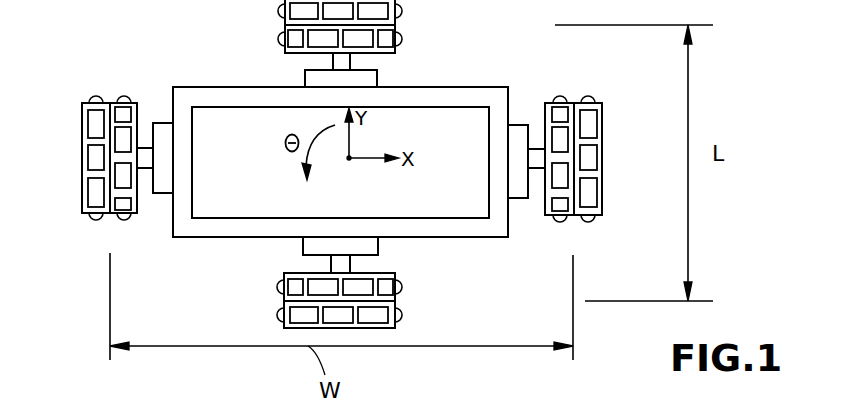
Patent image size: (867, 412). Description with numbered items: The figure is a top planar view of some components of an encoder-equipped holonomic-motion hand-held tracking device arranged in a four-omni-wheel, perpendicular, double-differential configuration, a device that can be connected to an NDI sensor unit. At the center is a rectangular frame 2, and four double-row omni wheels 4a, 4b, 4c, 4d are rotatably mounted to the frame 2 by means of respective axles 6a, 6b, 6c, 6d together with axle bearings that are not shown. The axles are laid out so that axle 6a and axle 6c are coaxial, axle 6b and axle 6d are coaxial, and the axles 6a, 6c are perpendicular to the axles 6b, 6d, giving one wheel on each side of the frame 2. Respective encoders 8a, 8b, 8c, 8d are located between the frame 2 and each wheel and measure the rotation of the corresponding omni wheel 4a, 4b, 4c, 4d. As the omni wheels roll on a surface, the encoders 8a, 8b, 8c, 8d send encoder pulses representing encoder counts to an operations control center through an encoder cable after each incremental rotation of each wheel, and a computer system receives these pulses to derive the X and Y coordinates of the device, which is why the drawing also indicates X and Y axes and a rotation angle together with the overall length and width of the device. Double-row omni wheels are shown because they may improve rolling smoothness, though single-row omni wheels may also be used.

The frame 2 is at (205, 240).
The omni wheel 4a is at (602, 124).
The omni wheel 4b is at (398, 12).
The omni wheel 4c is at (82, 172).
The omni wheel 4d is at (398, 288).
The axle 6a is at (542, 170).
The axle 6b is at (352, 58).
The axle 6c is at (140, 148).
The axle 6d is at (331, 268).
The encoder 8a is at (512, 125).
The encoder 8b is at (305, 85).
The encoder 8c is at (165, 195).
The encoder 8d is at (378, 240).